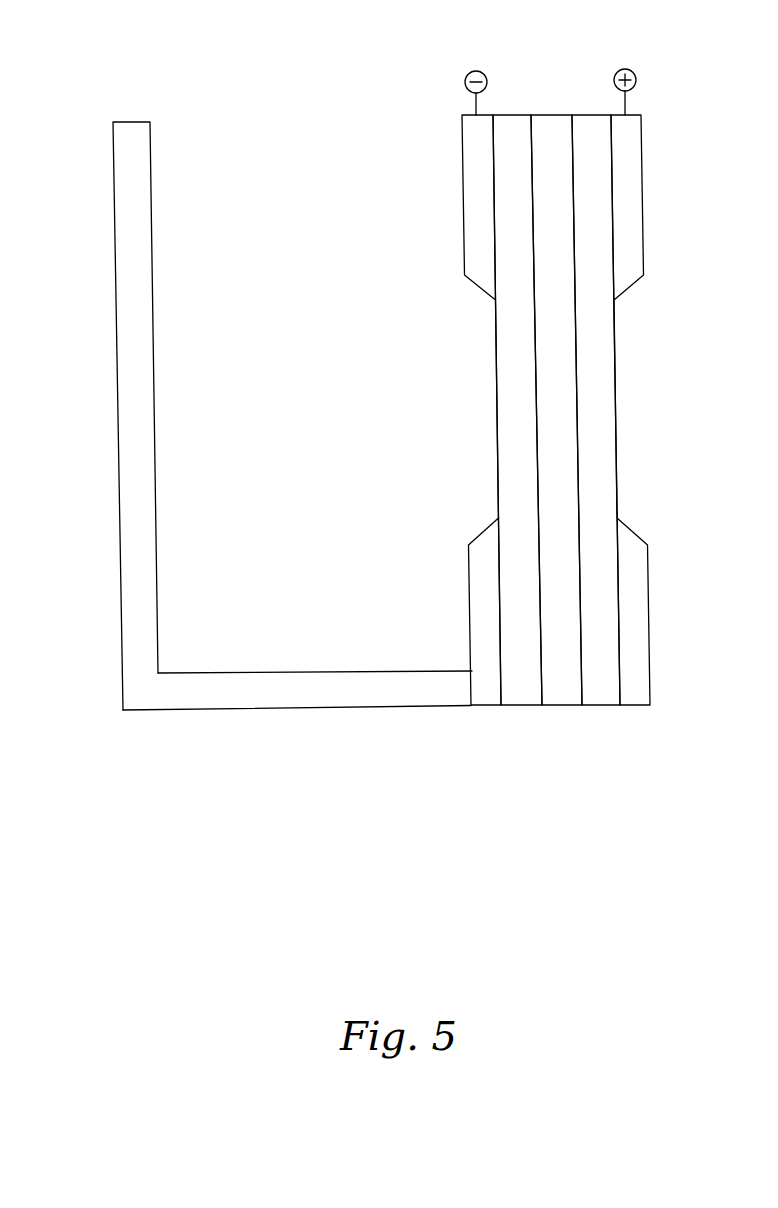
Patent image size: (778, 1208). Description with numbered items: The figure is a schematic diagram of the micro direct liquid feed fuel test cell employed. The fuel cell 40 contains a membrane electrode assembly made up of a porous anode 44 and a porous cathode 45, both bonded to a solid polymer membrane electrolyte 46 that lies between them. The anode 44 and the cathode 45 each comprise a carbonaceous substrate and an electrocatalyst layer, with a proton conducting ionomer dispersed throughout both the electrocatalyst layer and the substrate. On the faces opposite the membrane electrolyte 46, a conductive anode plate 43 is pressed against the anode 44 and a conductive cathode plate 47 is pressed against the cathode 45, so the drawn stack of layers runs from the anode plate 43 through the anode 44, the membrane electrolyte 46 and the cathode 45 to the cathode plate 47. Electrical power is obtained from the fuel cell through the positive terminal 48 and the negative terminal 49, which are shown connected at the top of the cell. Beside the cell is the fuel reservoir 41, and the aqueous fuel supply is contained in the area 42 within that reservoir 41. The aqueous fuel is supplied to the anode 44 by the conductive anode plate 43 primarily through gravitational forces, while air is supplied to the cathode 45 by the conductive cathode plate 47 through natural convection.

The fuel cell 40 is at (556, 518).
The fuel reservoir 41 is at (135, 635).
The area 42 is at (234, 642).
The conductive anode plate 43 is at (485, 685).
The porous anode 44 is at (520, 672).
The porous cathode 45 is at (600, 672).
The solid polymer membrane electrolyte 46 is at (560, 683).
The conductive cathode plate 47 is at (632, 683).
The positive terminal 48 is at (625, 69).
The negative terminal 49 is at (476, 71).